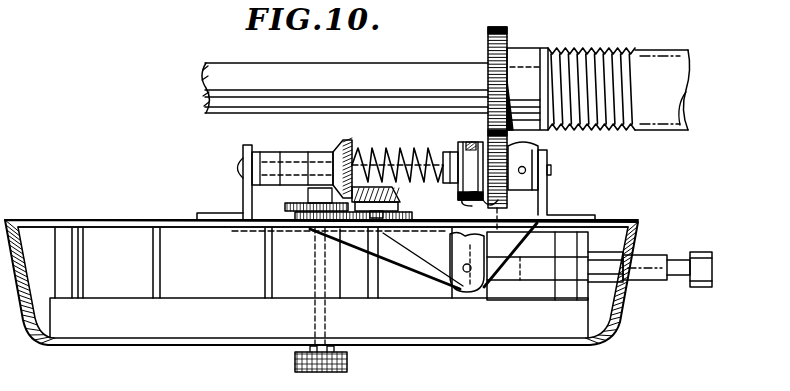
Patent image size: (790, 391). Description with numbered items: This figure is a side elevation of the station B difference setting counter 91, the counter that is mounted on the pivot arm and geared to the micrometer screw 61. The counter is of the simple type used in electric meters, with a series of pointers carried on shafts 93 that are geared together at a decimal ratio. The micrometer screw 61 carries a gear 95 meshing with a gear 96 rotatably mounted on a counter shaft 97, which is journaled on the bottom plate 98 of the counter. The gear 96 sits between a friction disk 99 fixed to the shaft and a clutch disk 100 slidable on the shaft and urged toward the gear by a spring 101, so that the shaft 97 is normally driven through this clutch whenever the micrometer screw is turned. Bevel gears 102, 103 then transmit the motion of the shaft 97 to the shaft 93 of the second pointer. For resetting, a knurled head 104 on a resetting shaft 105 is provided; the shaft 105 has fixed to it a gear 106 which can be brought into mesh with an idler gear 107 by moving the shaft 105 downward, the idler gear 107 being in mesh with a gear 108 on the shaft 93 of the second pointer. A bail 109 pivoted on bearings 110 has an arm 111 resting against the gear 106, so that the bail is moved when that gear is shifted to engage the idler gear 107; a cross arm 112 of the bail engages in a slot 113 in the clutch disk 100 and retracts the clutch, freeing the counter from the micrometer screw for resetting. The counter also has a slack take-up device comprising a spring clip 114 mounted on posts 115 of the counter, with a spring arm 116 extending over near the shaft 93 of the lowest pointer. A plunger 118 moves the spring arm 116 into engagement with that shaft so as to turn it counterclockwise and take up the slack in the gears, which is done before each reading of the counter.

The micrometer screw 61 is at (613, 50).
The station B difference setting counter 91 is at (172, 349).
The pointer shaft 93 is at (270, 258).
The micrometer screw gear 95 is at (501, 28).
The counter shaft gear 96 is at (487, 130).
The counter shaft 97 is at (412, 167).
The bottom plate 98 is at (134, 221).
The friction disk 99 is at (517, 138).
The clutch disk 100 is at (460, 143).
The spring 101 is at (377, 157).
The bevel gear 102 is at (347, 143).
The bevel gear 103 is at (398, 193).
The knurled head 104 is at (348, 363).
The resetting shaft 105 is at (318, 274).
The gear 106 is at (295, 205).
The idler gear 107 is at (290, 209).
The gear 108 is at (400, 207).
The bail 109 is at (488, 241).
The bearings 110 is at (403, 252).
The arm 111 is at (352, 240).
The cross arm 112 is at (470, 145).
The slot 113 is at (490, 199).
The spring clip 114 is at (596, 272).
The posts 115 is at (591, 247).
The spring arm 116 is at (522, 270).
The plunger 118 is at (700, 253).